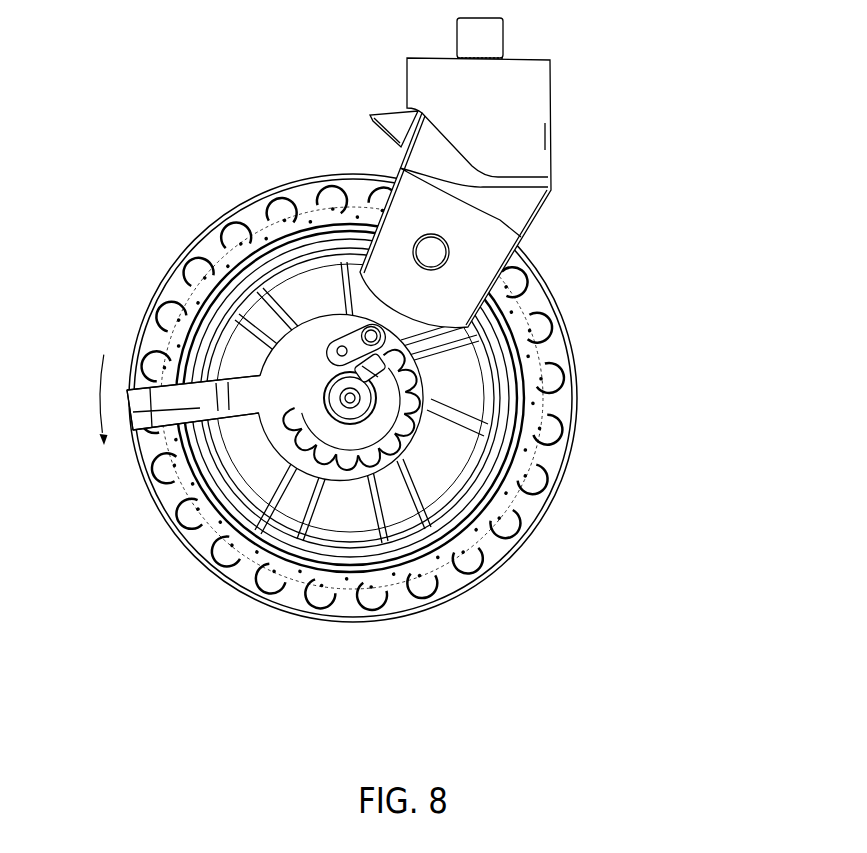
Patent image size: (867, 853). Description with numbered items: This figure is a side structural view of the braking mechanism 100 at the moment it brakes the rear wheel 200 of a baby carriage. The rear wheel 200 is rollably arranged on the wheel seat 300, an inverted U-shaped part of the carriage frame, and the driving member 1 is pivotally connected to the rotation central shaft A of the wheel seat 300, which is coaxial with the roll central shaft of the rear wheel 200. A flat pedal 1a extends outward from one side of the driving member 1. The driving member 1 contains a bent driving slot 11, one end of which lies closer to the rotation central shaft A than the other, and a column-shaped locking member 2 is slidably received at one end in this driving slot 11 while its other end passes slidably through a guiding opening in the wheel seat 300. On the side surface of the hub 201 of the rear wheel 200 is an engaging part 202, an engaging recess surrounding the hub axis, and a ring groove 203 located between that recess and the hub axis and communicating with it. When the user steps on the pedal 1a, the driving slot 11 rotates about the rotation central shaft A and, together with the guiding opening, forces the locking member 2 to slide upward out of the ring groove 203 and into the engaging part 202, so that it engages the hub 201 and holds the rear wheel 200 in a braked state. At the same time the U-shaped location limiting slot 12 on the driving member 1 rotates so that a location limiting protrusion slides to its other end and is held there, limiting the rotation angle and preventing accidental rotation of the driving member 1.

The braking mechanism 100 is at (173, 208).
The driving member 1 is at (312, 357).
The pedal 1a is at (180, 395).
The driving slot 11 is at (340, 333).
The location limiting slot 12 is at (395, 369).
The locking member 2 is at (363, 330).
The wheel seat 300 is at (478, 246).
The rear wheel 200 is at (497, 563).
The hub 201 is at (343, 480).
The engaging part 202 is at (297, 442).
The ring groove 203 is at (377, 462).
The rotation central shaft A is at (440, 436).